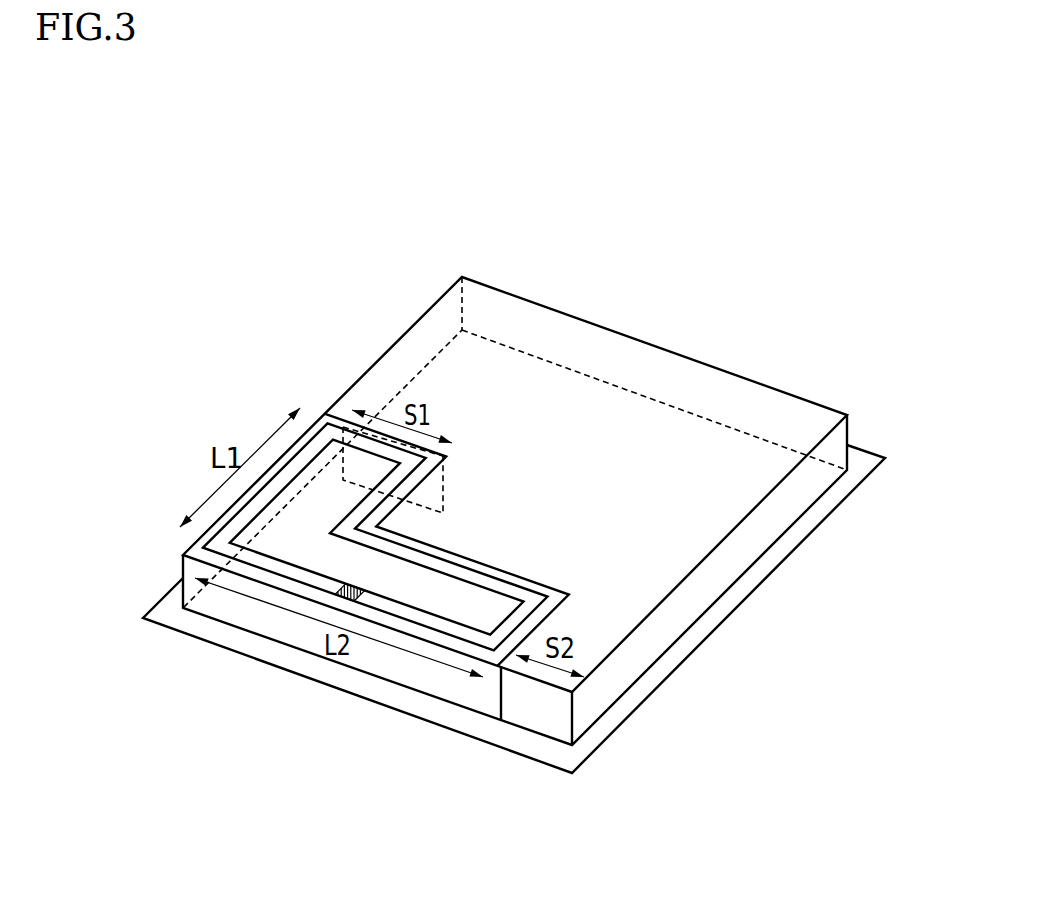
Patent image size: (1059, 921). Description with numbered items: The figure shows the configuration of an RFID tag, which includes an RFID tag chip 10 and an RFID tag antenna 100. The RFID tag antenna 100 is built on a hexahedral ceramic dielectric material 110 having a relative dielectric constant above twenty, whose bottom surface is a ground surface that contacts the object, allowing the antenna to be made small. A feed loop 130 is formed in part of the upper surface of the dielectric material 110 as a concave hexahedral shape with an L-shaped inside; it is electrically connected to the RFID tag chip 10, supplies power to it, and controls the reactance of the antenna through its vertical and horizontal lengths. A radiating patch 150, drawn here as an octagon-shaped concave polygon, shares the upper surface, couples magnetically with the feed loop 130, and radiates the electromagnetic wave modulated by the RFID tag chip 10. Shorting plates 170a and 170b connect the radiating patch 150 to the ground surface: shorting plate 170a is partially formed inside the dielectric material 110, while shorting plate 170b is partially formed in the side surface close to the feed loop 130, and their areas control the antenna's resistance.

The RFID tag antenna 100 is at (488, 326).
The ceramic dielectric material 110 is at (697, 593).
The RFID tag chip 10 is at (330, 589).
The feed loop 130 is at (427, 617).
The radiating patch 150 is at (632, 433).
The shorting plate 170a is at (448, 478).
The shorting plate 170b is at (552, 713).